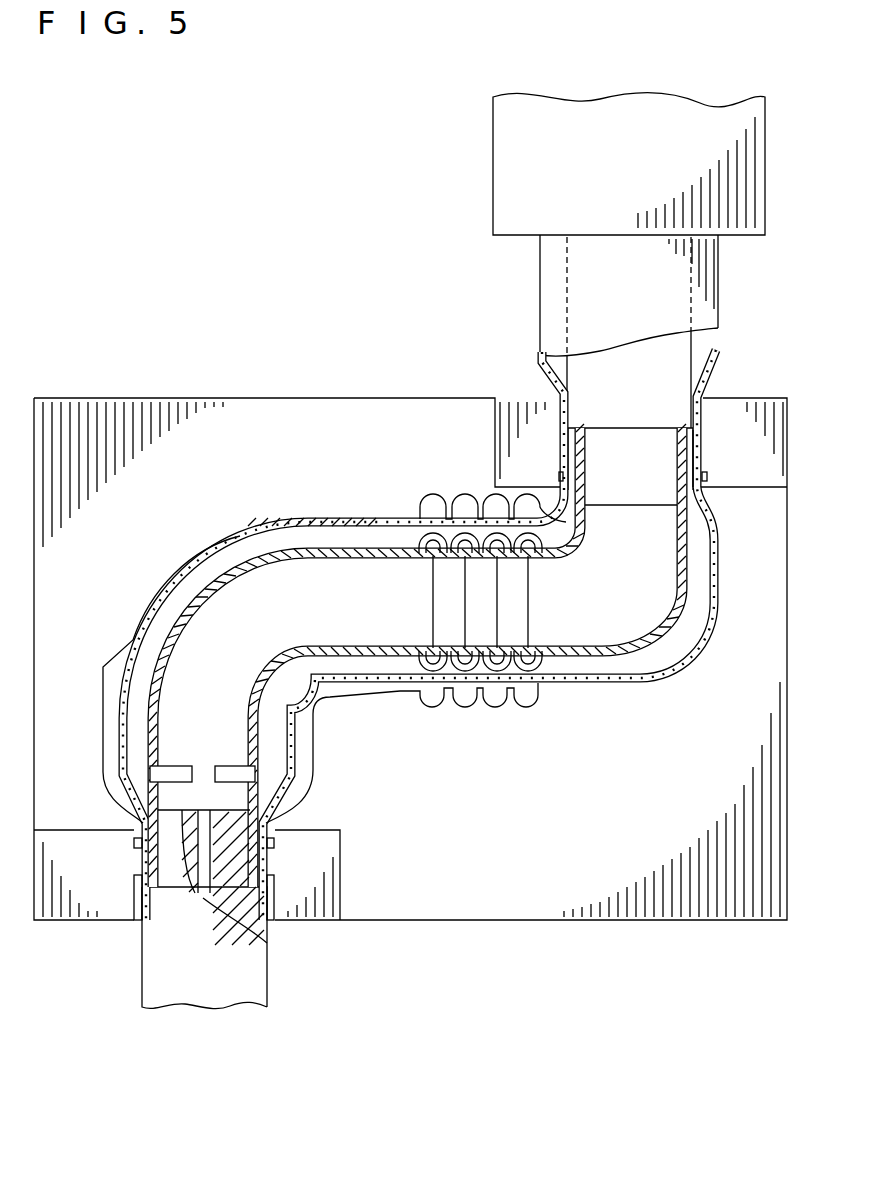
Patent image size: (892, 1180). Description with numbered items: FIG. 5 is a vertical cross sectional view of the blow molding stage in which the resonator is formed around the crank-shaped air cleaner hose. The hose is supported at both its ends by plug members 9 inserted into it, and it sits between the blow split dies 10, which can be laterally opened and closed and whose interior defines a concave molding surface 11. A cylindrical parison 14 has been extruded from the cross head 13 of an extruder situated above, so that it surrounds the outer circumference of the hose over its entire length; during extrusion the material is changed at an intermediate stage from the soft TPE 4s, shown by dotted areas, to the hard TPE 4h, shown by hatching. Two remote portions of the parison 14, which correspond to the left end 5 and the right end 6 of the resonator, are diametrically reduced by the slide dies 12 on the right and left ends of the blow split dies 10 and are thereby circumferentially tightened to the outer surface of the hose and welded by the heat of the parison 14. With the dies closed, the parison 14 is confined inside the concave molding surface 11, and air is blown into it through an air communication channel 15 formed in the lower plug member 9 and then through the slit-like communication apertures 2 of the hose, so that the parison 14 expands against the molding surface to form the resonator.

The communication apertures 2 is at (224, 777).
The hard TPE 4h is at (257, 532).
The soft TPE 4s is at (420, 517).
The left end 5 is at (270, 858).
The right end 6 is at (692, 458).
The plug members 9 is at (677, 352).
The blow split dies 10 is at (155, 408).
The concave molding surface 11 is at (381, 690).
The slide dies 12 is at (516, 432).
The cross head 13 is at (497, 168).
The parison 14 is at (212, 548).
The air communication channel 15 is at (195, 893).